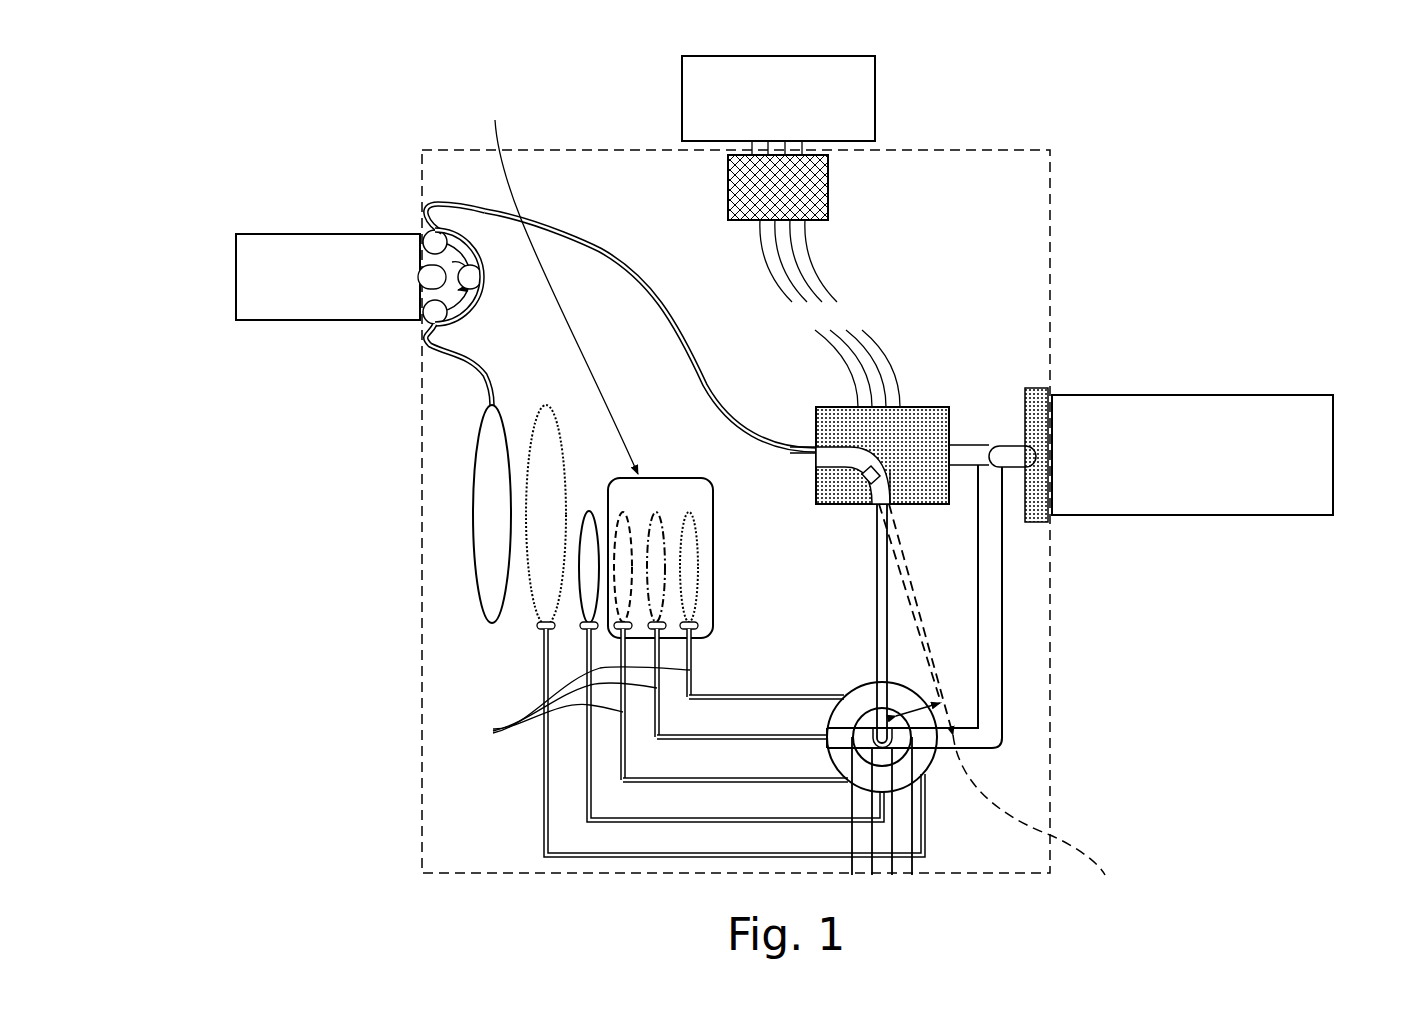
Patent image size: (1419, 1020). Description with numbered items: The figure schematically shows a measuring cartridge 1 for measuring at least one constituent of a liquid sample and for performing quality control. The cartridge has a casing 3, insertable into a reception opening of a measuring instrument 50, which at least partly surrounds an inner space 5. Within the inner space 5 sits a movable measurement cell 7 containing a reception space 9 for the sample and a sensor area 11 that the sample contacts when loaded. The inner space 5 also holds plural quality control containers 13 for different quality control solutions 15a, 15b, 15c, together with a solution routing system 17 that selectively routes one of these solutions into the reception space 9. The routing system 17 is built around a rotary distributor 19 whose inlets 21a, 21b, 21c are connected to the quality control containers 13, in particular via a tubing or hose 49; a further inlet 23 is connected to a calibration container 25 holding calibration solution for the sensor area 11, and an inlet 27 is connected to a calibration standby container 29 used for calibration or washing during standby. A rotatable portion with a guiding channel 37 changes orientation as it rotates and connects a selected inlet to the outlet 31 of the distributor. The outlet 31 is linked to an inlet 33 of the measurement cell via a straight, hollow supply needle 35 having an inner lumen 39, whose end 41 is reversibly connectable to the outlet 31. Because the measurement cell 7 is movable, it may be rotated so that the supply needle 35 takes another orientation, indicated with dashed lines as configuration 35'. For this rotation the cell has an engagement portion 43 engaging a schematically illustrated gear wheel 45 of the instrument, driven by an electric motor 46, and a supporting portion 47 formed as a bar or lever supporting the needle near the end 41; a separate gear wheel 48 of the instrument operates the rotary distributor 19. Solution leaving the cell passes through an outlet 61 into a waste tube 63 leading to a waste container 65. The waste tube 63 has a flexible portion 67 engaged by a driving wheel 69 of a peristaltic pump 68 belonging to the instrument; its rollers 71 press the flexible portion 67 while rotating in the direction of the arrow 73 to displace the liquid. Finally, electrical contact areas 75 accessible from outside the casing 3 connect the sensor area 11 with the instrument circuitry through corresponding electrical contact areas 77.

The measuring cartridge 1 is at (1066, 124).
The casing 3 is at (1052, 270).
The inner space 5 is at (965, 280).
The measurement cell 7 is at (922, 405).
The reception space 9 is at (895, 485).
The sensor area 11 is at (840, 490).
The quality control containers 13 is at (661, 478).
The quality control solution 15a is at (610, 626).
The quality control solution 15b is at (690, 632).
The quality control solution 15c is at (698, 532).
The solution routing system 17 is at (788, 647).
The rotary distributor 19 is at (893, 703).
The inlet 21a is at (845, 780).
The inlet 21b is at (826, 745).
The inlet 21c is at (840, 692).
The inlet 23 is at (885, 795).
The calibration container 25 is at (589, 512).
The inlet 27 is at (920, 782).
The calibration standby container 29 is at (548, 405).
The outlet 31 is at (868, 692).
The inlet 33 is at (868, 505).
The supply needle 35 is at (920, 603).
The configuration of supply needle 35' is at (1036, 706).
The guiding channel 37 is at (845, 728).
The inner lumen 39 is at (877, 655).
The end 41 is at (955, 718).
The engagement portion 43 is at (987, 438).
The gear wheel 45 is at (1048, 390).
The electric motor 46 is at (1202, 395).
The supporting portion 47 is at (1003, 548).
The gear wheel 48 is at (925, 765).
The hose 49 is at (574, 704).
The measuring instrument 50 is at (702, 632).
The outlet 61 is at (816, 448).
The waste tube 63 is at (643, 268).
The waste container 65 is at (476, 470).
The flexible portion 67 is at (489, 318).
The peristaltic pump 68 is at (300, 320).
The driving wheel 69 is at (432, 230).
The rollers 71 is at (428, 238).
The arrow 73 is at (479, 268).
The electrical contact areas 75 is at (830, 200).
The electrical contact areas 77 is at (875, 100).